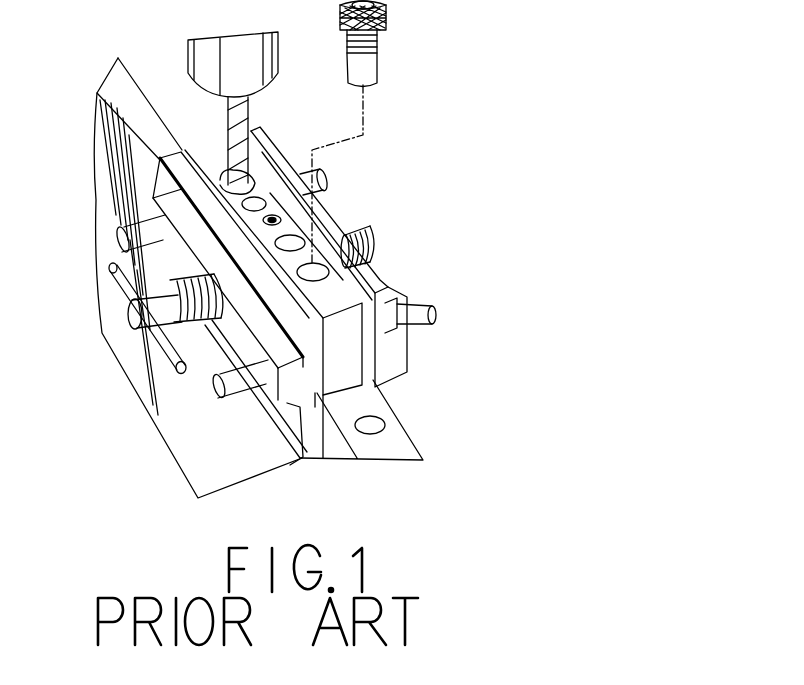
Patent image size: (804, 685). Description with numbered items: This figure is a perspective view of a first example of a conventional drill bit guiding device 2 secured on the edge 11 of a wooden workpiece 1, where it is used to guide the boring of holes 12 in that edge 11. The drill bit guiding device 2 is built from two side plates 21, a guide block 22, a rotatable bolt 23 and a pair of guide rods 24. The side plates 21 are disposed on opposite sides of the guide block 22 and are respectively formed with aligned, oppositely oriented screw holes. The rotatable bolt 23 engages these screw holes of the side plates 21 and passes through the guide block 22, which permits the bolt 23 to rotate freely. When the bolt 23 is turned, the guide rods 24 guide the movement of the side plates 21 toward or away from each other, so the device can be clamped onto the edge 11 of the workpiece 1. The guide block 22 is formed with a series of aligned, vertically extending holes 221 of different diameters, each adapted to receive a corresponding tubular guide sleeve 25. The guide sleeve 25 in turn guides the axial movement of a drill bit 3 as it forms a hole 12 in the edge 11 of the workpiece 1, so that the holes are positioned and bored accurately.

The wooden workpiece 1 is at (100, 258).
The edge 11 is at (103, 96).
The holes 12 is at (372, 427).
The drill bit guiding device 2 is at (302, 336).
The side plates 21 is at (400, 352).
The guide block 22 is at (332, 304).
The holes 221 is at (318, 270).
The rotatable bolt 23 is at (373, 240).
The guide rods 24 is at (328, 177).
The tubular guide sleeve 25 is at (386, 17).
The drill bit 3 is at (230, 123).